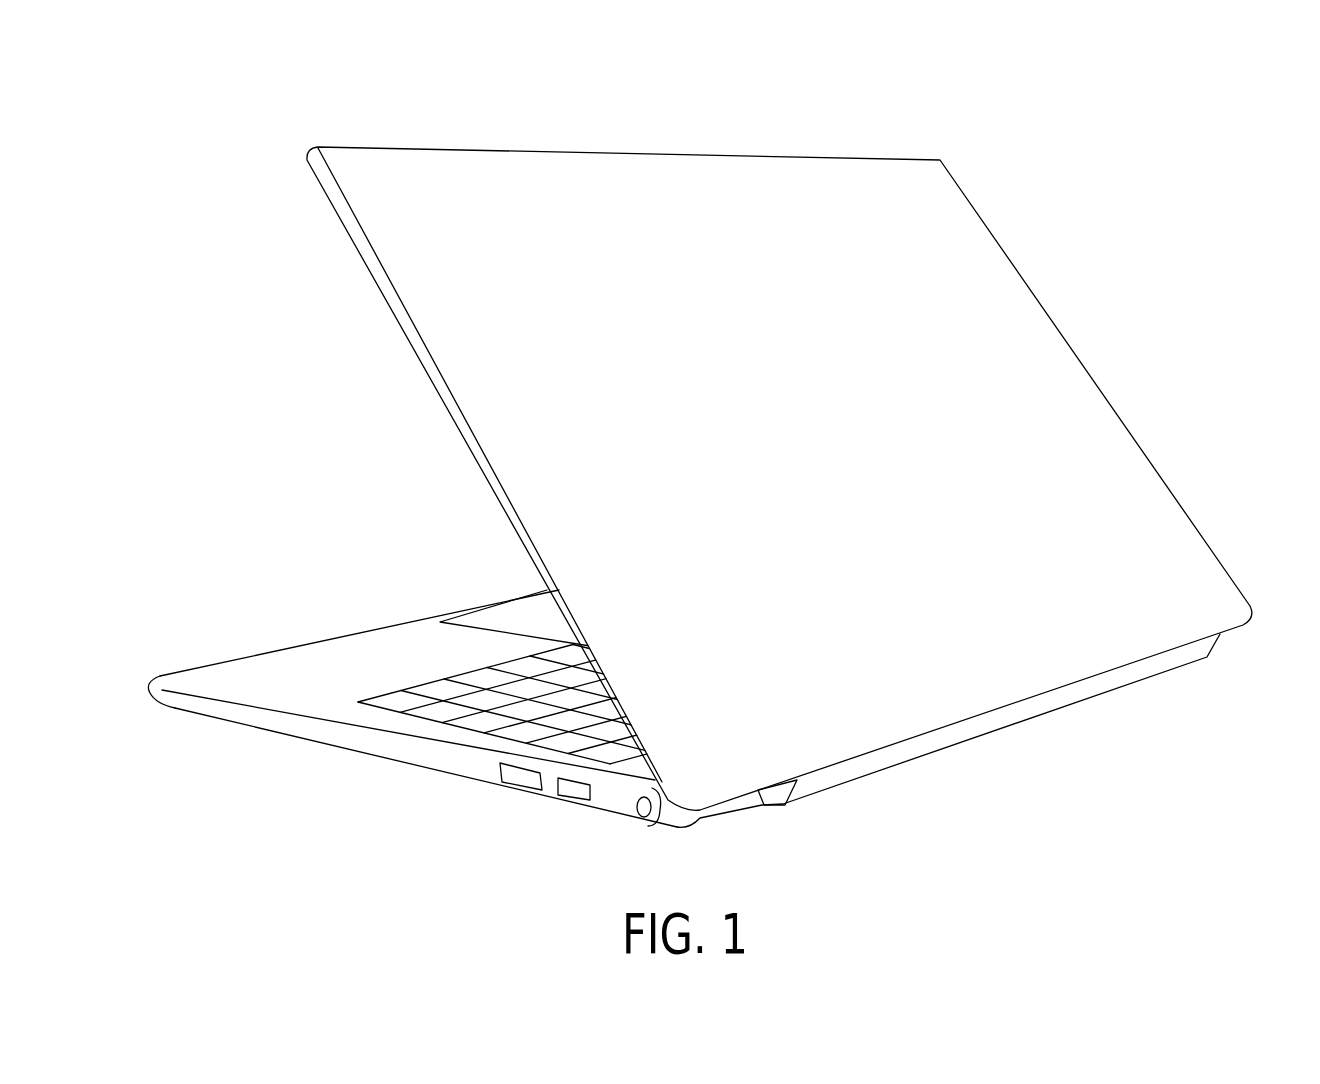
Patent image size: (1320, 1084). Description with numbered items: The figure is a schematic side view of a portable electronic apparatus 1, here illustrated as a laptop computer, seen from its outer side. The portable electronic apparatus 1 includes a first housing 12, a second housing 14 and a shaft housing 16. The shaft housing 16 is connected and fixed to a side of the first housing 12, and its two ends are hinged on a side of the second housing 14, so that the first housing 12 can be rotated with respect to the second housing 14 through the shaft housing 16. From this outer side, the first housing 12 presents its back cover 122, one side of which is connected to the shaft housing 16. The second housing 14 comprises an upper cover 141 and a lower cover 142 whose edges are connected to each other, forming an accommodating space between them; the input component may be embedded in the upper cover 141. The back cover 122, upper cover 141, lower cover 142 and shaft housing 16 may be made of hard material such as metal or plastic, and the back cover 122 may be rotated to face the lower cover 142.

The portable electronic apparatus 1 is at (1137, 105).
The first housing 12 is at (779, 428).
The back cover 122 is at (655, 240).
The second housing 14 is at (307, 508).
The upper cover 141 is at (337, 667).
The lower cover 142 is at (244, 707).
The shaft housing 16 is at (1020, 712).